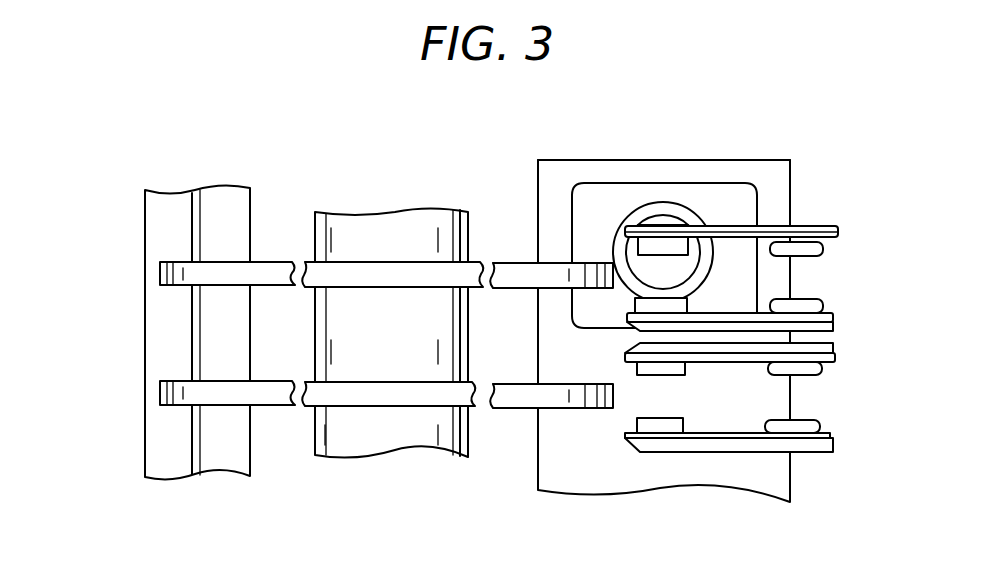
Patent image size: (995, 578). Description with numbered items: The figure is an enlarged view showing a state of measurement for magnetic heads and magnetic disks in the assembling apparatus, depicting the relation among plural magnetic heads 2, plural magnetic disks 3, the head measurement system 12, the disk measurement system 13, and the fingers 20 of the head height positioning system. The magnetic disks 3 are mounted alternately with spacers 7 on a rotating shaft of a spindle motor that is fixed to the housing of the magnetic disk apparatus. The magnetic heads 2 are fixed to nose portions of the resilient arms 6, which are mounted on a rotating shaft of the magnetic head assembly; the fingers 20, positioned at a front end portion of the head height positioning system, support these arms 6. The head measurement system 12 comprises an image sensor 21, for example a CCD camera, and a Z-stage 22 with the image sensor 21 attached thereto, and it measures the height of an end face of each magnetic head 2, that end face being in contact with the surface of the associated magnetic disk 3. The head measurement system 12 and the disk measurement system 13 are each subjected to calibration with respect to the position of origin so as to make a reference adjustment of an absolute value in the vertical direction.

The magnetic head 2 is at (665, 245).
The magnetic disk 3 is at (268, 262).
The resilient arm 6 is at (757, 232).
The spacer 7 is at (381, 228).
The head measurement system 12 is at (535, 193).
The disk measurement system 13 is at (222, 200).
The finger 20 is at (797, 245).
The image sensor 21 is at (586, 200).
The Z-stage 22 is at (627, 173).